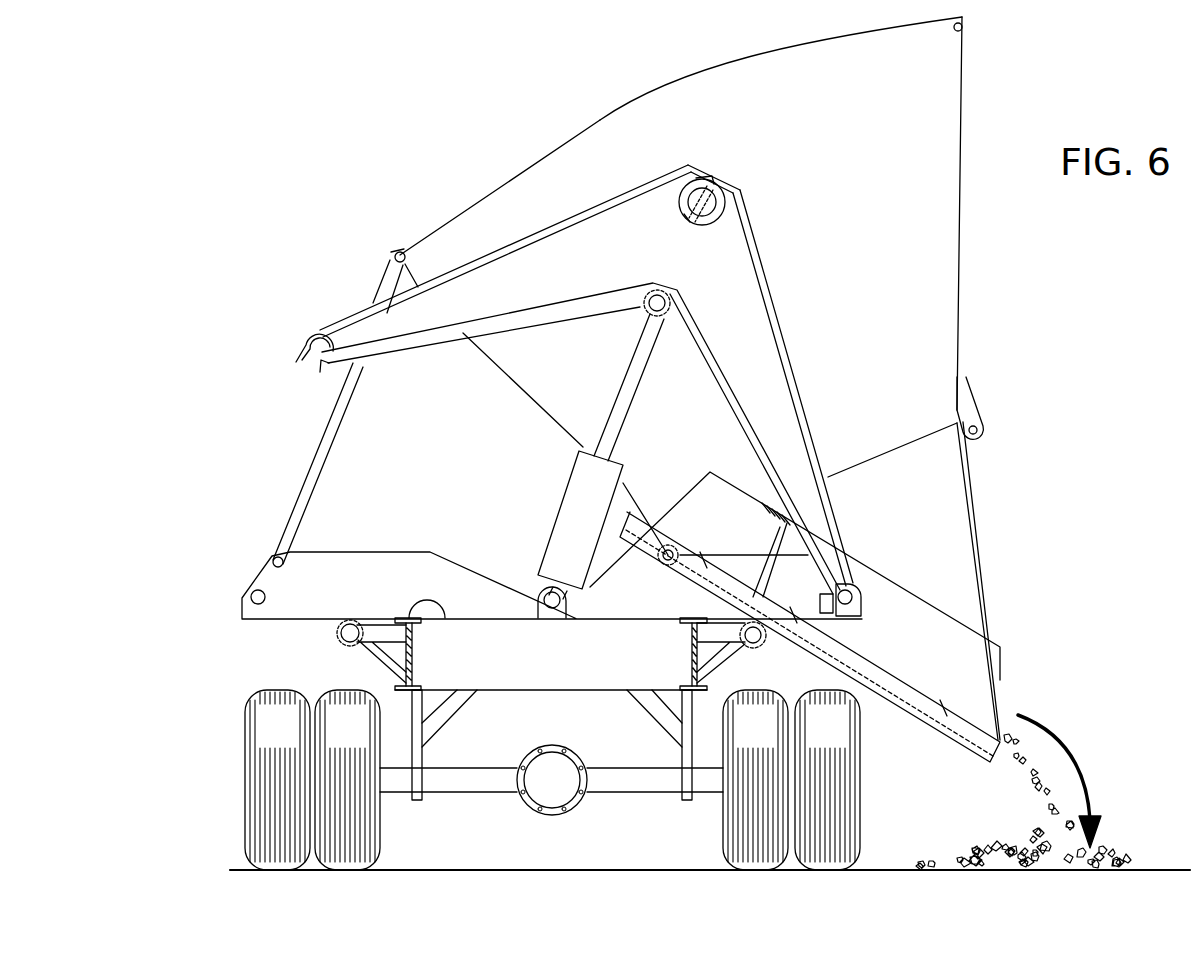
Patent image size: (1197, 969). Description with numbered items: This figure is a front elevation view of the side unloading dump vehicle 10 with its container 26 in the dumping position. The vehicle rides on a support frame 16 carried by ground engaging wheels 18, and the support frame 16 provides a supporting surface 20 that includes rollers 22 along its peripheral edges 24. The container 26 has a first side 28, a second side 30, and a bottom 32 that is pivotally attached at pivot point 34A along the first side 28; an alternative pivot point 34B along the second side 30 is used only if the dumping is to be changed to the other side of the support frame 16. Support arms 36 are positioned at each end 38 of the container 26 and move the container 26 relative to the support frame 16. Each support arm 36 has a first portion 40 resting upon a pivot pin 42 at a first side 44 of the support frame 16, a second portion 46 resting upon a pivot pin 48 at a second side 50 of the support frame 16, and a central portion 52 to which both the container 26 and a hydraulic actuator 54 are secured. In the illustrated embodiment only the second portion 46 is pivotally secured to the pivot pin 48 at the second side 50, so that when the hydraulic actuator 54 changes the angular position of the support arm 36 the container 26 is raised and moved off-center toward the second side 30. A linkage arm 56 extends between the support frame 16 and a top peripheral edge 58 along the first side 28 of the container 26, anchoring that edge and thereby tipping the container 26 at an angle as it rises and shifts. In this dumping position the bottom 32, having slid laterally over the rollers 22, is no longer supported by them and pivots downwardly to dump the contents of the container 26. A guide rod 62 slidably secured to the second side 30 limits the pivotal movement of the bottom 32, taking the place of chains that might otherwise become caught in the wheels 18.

The side unloading dump vehicle 10 is at (413, 150).
The support frame 16 is at (400, 650).
The ground engaging wheels 18 is at (262, 728).
The supporting surface 20 is at (440, 606).
The rollers 22 is at (350, 647).
The peripheral edges 24 is at (340, 633).
The container 26 is at (600, 118).
The first side 28 is at (473, 350).
The second side 30 is at (963, 258).
The bottom 32 is at (926, 720).
The pivot point 34A is at (666, 565).
The alternative pivot point 34B is at (978, 428).
The support arm 36 is at (770, 375).
The end 38 is at (730, 125).
The first portion 40 is at (366, 330).
The pivot pin 42 is at (258, 592).
The first side 44 is at (240, 612).
The second portion 46 is at (771, 388).
The pivot pin 48 is at (851, 582).
The second side 50 is at (862, 606).
The central portion 52 is at (672, 232).
The hydraulic actuator 54 is at (572, 505).
The linkage arm 56 is at (313, 465).
The top peripheral edge 58 is at (399, 250).
The guide rod 62 is at (969, 520).